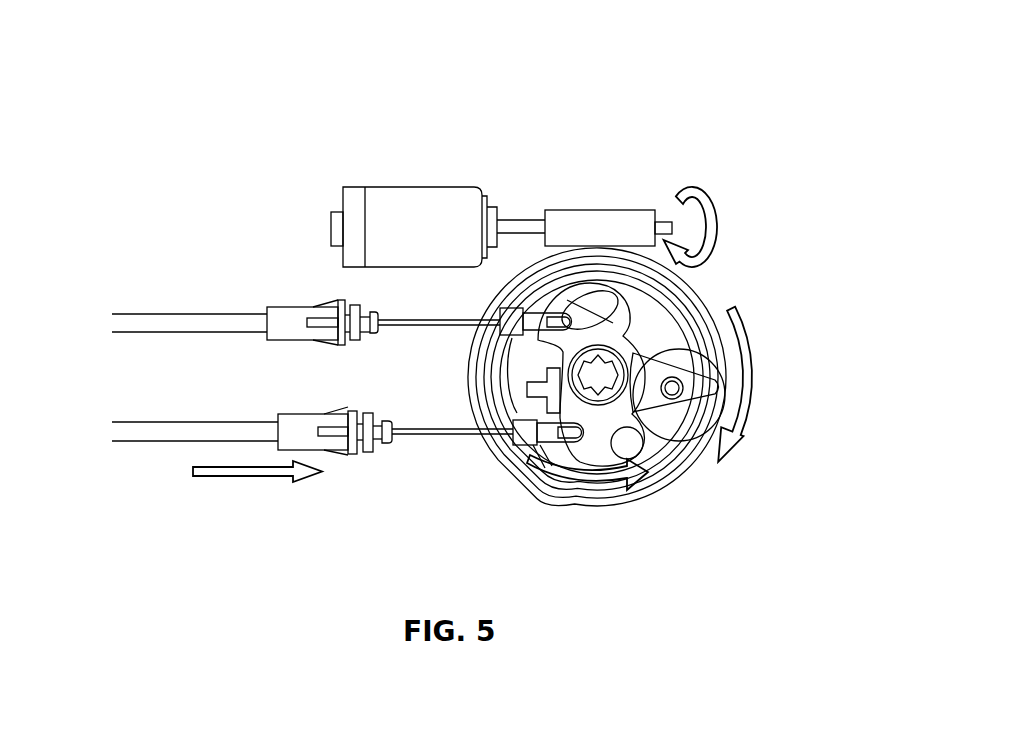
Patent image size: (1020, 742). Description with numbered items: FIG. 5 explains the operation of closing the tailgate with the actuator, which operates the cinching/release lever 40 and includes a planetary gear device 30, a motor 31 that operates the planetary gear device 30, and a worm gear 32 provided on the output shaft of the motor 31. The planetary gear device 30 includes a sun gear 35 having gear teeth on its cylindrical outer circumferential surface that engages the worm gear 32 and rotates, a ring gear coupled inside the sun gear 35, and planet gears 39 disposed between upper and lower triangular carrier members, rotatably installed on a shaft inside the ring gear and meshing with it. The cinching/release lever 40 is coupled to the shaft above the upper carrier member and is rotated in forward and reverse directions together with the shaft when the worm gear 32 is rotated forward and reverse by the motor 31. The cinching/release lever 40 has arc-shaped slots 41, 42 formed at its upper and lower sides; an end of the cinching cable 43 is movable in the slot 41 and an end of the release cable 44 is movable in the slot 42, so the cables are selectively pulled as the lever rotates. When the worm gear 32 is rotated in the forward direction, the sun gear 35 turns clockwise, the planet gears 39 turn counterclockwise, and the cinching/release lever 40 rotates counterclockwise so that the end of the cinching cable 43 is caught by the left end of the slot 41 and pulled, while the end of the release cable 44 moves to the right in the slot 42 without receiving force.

The planetary gear device 30 is at (703, 438).
The motor 31 is at (392, 193).
The worm gear 32 is at (578, 218).
The sun gear 35 is at (636, 476).
The planet gears 39 is at (676, 340).
The cinching/release lever 40 is at (668, 412).
The slot 41 is at (628, 468).
The slot 42 is at (605, 292).
The cinching cable 43 is at (163, 432).
The release cable 44 is at (172, 320).